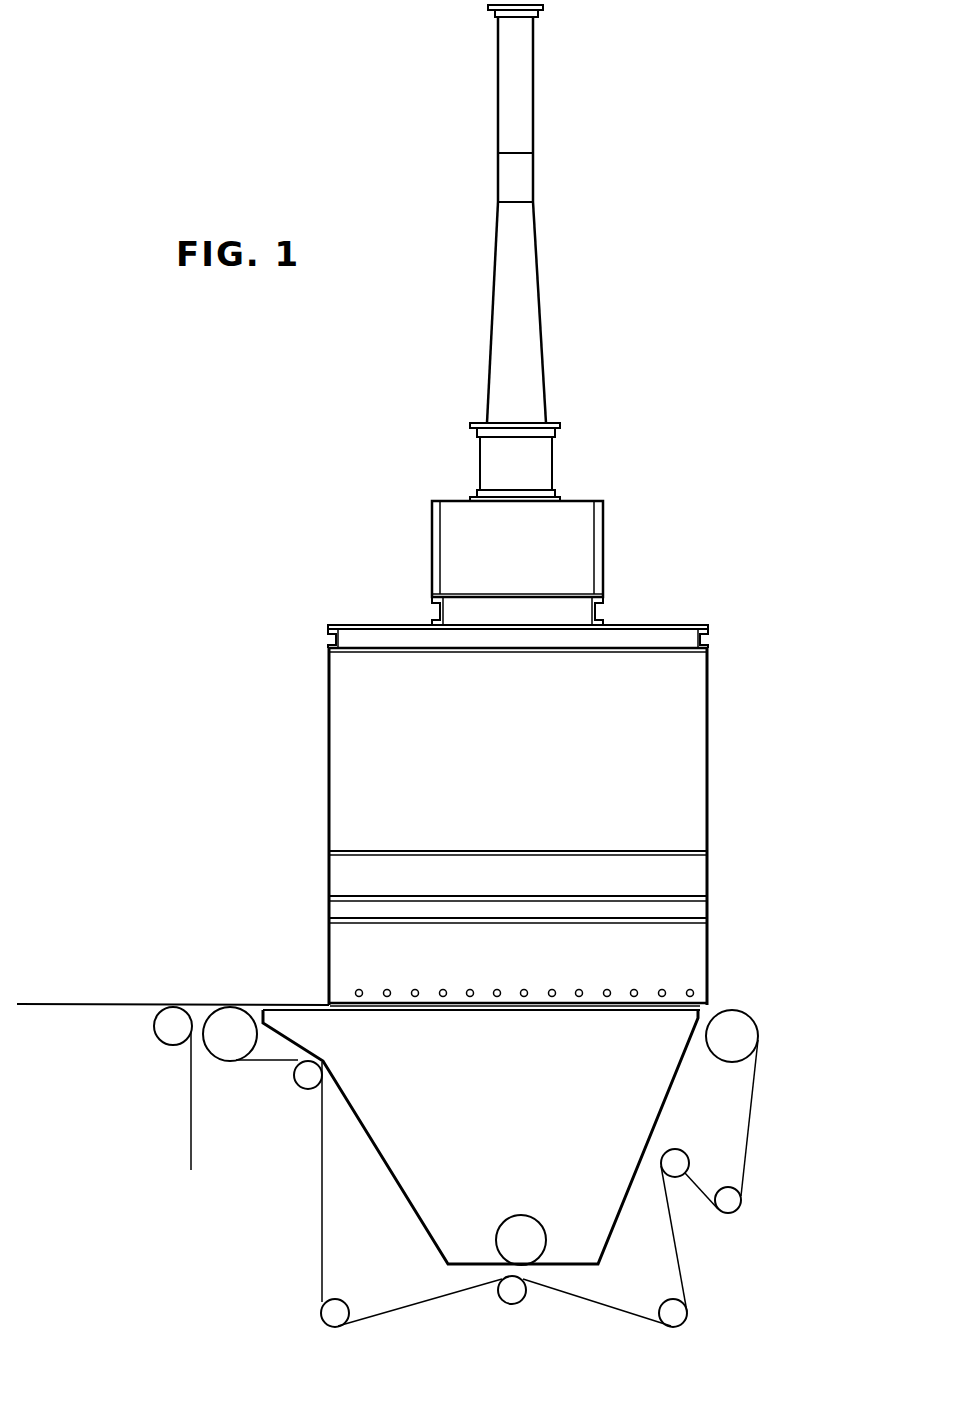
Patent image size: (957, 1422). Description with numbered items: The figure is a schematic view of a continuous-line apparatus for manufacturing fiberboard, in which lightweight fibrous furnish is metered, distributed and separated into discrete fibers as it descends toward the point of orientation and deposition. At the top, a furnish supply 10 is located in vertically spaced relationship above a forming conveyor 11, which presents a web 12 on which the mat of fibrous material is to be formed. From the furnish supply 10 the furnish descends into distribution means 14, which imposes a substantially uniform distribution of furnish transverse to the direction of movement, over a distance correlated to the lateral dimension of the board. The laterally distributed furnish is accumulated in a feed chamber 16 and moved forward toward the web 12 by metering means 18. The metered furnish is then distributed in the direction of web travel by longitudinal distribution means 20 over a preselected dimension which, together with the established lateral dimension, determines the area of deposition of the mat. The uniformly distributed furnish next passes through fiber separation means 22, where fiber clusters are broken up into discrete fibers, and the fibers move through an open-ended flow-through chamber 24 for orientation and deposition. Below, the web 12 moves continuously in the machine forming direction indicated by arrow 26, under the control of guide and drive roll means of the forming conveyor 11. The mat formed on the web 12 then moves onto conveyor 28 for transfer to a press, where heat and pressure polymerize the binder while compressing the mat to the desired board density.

The furnish supply 10 is at (523, 143).
The distribution means 14 is at (525, 191).
The feed chamber 16 is at (525, 333).
The metering means 18 is at (560, 525).
The longitudinal distribution means 20 is at (708, 700).
The fiber separation means 22 is at (693, 882).
The open-ended flow-through chamber 24 is at (690, 975).
The forming conveyor 11 is at (730, 1003).
The web 12 is at (293, 1003).
The arrow 26 is at (325, 1022).
The conveyor 28 is at (110, 1003).